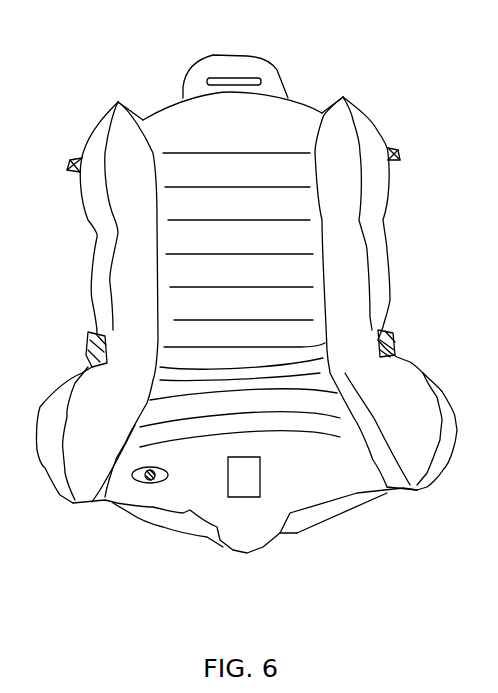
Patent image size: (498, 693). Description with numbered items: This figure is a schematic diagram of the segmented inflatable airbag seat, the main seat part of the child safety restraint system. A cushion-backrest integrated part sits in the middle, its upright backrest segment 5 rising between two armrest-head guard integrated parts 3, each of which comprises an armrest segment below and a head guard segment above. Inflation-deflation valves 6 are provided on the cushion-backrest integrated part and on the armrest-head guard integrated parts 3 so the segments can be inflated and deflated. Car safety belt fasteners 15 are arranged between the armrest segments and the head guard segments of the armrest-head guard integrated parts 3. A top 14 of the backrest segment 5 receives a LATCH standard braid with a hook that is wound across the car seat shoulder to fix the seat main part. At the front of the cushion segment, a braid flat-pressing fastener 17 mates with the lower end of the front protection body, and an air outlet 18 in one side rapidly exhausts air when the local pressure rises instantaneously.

The armrest-head guard integrated part 3 is at (93, 433).
The backrest segment 5 is at (182, 135).
The inflation-deflation valve 6 is at (68, 163).
The top 14 is at (237, 82).
The car safety belt fastener 15 is at (88, 340).
The braid flat-pressing fastener 17 is at (243, 473).
The air outlet 18 is at (152, 483).